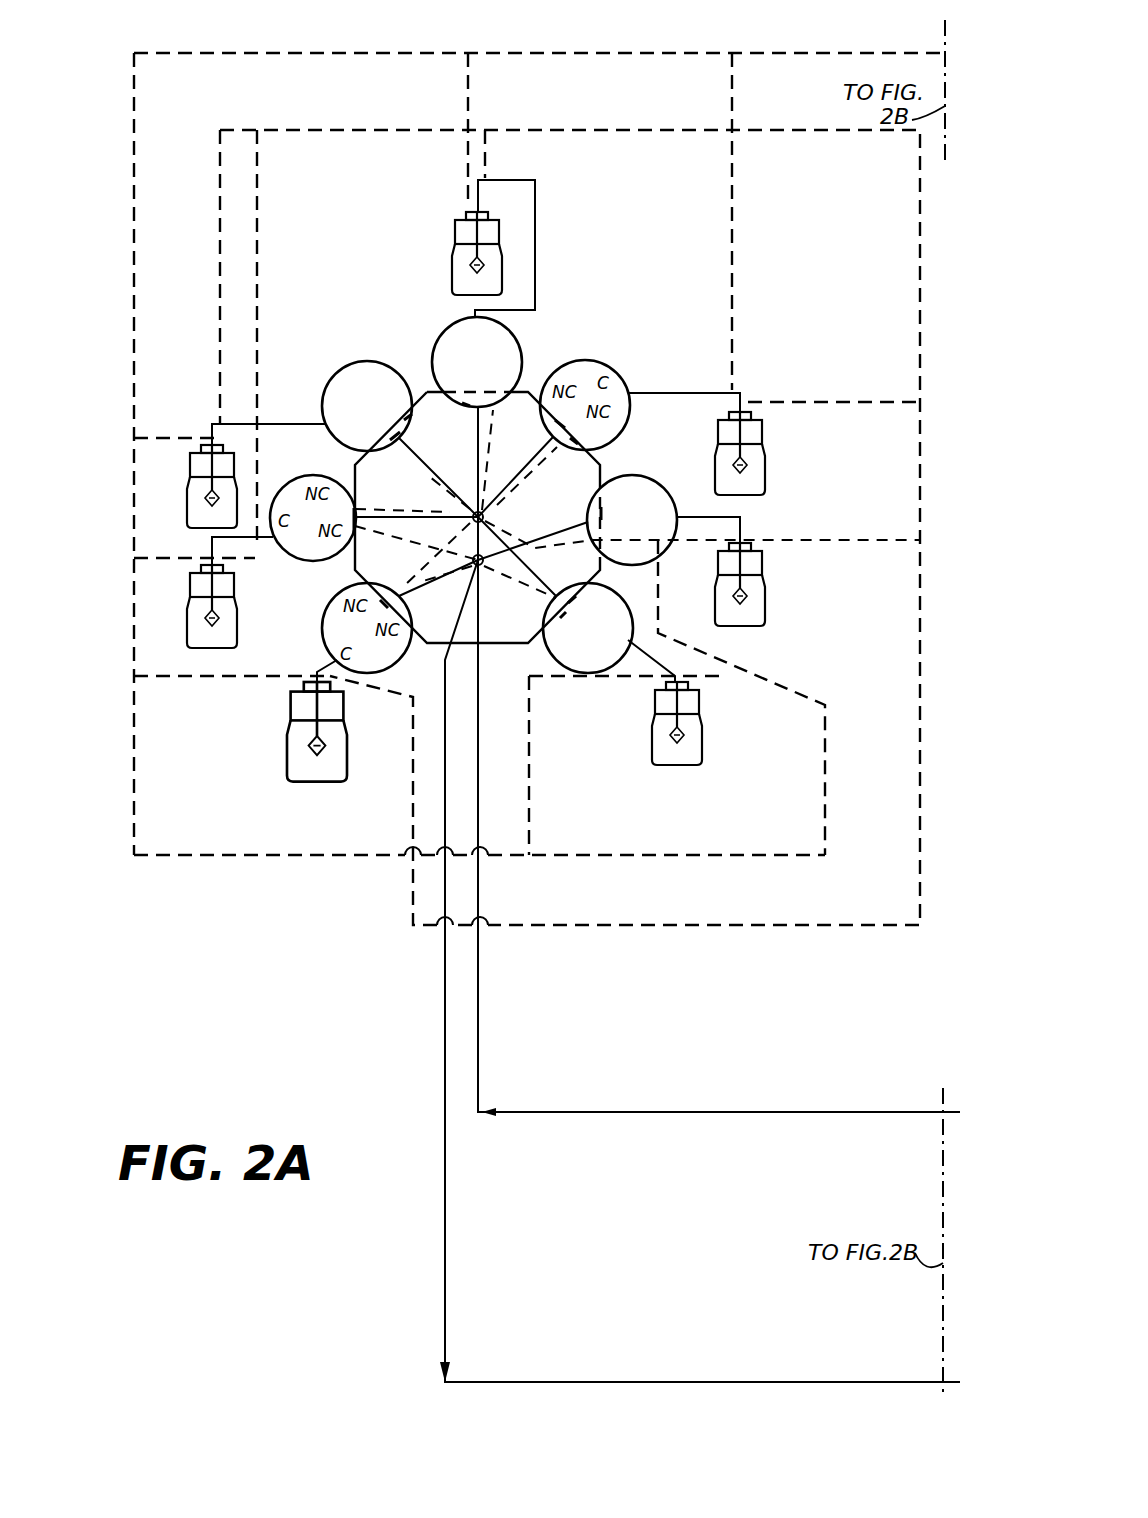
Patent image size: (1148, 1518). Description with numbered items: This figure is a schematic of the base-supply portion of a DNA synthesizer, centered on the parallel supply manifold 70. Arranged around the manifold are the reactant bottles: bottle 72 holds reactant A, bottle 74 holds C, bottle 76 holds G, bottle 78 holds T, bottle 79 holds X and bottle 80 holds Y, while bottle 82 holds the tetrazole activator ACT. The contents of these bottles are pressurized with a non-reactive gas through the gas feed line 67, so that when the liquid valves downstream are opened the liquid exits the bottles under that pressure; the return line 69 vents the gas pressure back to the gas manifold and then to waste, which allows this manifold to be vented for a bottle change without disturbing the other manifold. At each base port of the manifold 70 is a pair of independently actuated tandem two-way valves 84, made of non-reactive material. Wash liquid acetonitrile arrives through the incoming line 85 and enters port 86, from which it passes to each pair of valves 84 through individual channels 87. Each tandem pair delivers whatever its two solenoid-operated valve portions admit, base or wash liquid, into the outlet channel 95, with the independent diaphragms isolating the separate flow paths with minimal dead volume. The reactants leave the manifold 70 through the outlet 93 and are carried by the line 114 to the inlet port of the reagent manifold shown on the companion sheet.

The return line 69 is at (740, 53).
The gas feed line 67 is at (808, 132).
The supply manifold 70 is at (430, 355).
The bottle 76 is at (454, 262).
The two-way valves 84 is at (350, 364).
The channel 87 is at (503, 420).
The bottle 74 is at (186, 506).
The bottle 72 is at (186, 612).
The outlet 93 is at (474, 508).
The outlet channel 95 is at (428, 523).
The port 86 is at (486, 572).
The bottle 78 is at (767, 478).
The bottle 79 is at (767, 627).
The bottle 80 is at (650, 742).
The bottle 82 is at (287, 746).
The incoming line 85 is at (640, 1112).
The line 114 is at (738, 1382).